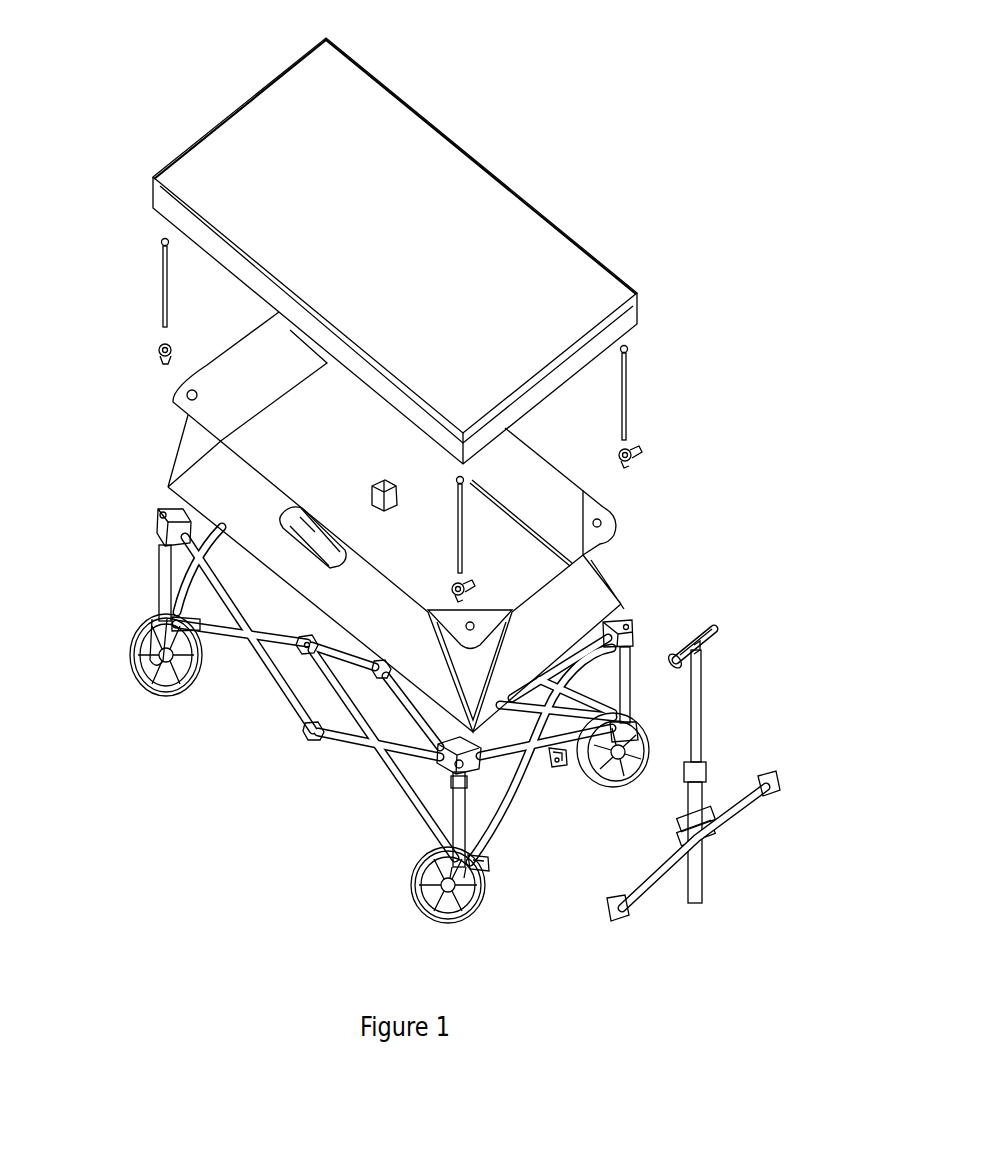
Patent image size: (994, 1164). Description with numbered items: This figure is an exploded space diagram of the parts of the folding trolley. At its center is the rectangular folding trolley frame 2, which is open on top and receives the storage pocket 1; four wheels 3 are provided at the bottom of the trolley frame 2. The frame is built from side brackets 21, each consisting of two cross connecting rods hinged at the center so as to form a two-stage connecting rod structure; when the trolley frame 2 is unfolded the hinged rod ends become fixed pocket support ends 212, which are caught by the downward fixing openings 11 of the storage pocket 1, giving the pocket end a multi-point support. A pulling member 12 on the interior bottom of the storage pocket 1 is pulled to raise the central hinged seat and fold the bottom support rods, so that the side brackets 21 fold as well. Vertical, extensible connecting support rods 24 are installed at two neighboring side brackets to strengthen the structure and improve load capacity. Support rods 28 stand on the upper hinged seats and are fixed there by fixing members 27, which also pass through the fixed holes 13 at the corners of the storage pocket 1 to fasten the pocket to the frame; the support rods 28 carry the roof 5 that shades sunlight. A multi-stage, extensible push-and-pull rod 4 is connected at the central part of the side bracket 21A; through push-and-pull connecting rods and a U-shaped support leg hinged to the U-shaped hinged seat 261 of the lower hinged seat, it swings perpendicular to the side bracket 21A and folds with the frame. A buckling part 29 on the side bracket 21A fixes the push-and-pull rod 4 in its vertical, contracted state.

The storage pocket 1 is at (409, 524).
The fixing opening 11 is at (306, 545).
The pulling member 12 is at (372, 483).
The fixed hole 13 is at (603, 528).
The trolley frame 2 is at (362, 701).
The side bracket 21 is at (370, 748).
The pocket support end 212 is at (311, 650).
The side bracket 21A is at (535, 752).
The connecting support rod 24 is at (161, 574).
The U-shaped hinged seat 261 is at (489, 866).
The fixing member 27 is at (641, 448).
The support rod 28 is at (629, 427).
The buckling part 29 is at (563, 758).
The wheel 3 is at (413, 882).
The push-and-pull rod 4 is at (697, 723).
The roof 5 is at (261, 195).